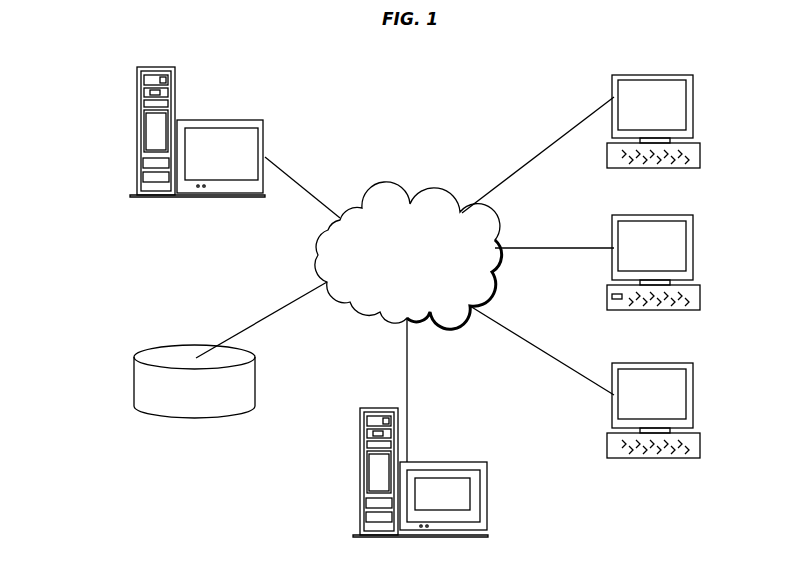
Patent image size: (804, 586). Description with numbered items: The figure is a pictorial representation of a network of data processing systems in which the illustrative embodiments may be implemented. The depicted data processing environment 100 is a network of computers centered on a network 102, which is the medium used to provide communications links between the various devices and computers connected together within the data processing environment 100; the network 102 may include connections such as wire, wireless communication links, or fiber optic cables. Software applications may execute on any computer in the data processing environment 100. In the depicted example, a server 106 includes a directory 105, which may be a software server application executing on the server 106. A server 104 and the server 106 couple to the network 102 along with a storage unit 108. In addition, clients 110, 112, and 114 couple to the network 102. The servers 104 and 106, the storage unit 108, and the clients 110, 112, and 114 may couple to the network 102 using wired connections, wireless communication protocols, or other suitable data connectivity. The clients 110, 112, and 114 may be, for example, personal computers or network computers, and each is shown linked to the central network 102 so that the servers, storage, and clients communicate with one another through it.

The data processing environment 100 is at (84, 87).
The network 102 is at (418, 272).
The server 104 is at (237, 221).
The directory 105 is at (470, 490).
The server 106 is at (465, 485).
The storage unit 108 is at (206, 411).
The client 110 is at (691, 328).
The client 112 is at (691, 476).
The client 114 is at (691, 186).